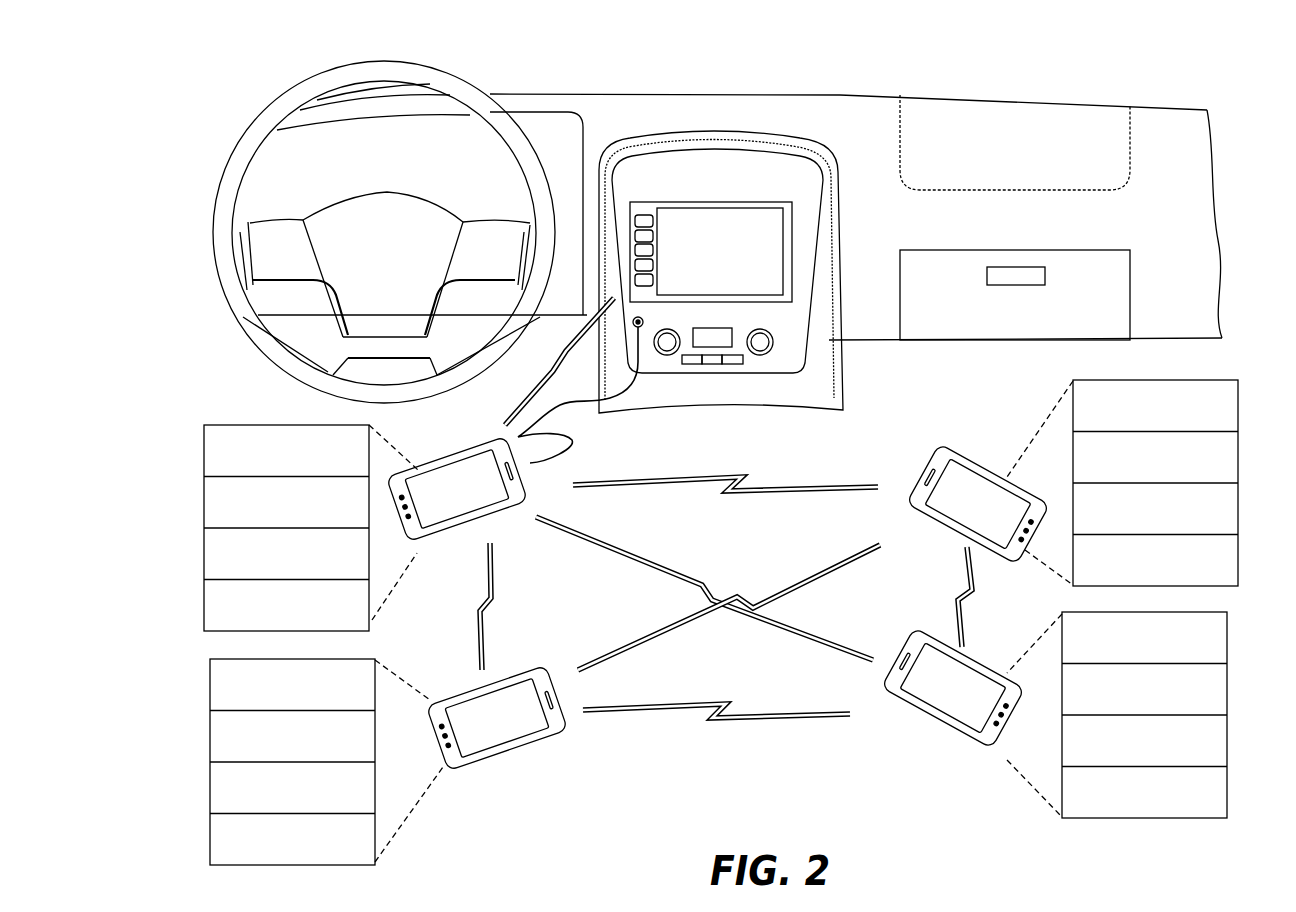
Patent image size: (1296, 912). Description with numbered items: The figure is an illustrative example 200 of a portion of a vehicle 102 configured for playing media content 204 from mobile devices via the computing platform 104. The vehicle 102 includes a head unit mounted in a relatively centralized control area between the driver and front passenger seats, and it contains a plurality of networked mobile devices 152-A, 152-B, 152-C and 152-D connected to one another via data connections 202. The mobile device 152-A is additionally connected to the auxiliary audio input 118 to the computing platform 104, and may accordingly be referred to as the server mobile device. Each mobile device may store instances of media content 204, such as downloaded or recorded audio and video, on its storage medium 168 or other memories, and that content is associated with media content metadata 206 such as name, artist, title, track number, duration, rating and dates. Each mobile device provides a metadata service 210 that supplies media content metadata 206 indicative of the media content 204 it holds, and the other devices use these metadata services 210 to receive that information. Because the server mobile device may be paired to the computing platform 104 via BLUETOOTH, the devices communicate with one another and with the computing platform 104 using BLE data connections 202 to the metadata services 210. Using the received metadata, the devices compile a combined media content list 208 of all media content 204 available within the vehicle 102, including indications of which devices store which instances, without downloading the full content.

The illustrative example 200 is at (222, 78).
The vehicle 102 is at (742, 92).
The computing platform 104 is at (721, 200).
The auxiliary audio input 118 is at (644, 322).
The mobile device 152-A is at (500, 522).
The mobile device 152-B is at (536, 757).
The mobile device 152-C is at (944, 530).
The mobile device 152-D is at (933, 728).
The storage medium 168 is at (204, 462).
The data connections 202 is at (837, 745).
The media content 204 is at (722, 547).
The media content metadata 206 is at (721, 599).
The media content list 208 is at (721, 650).
The metadata service 210 is at (721, 702).